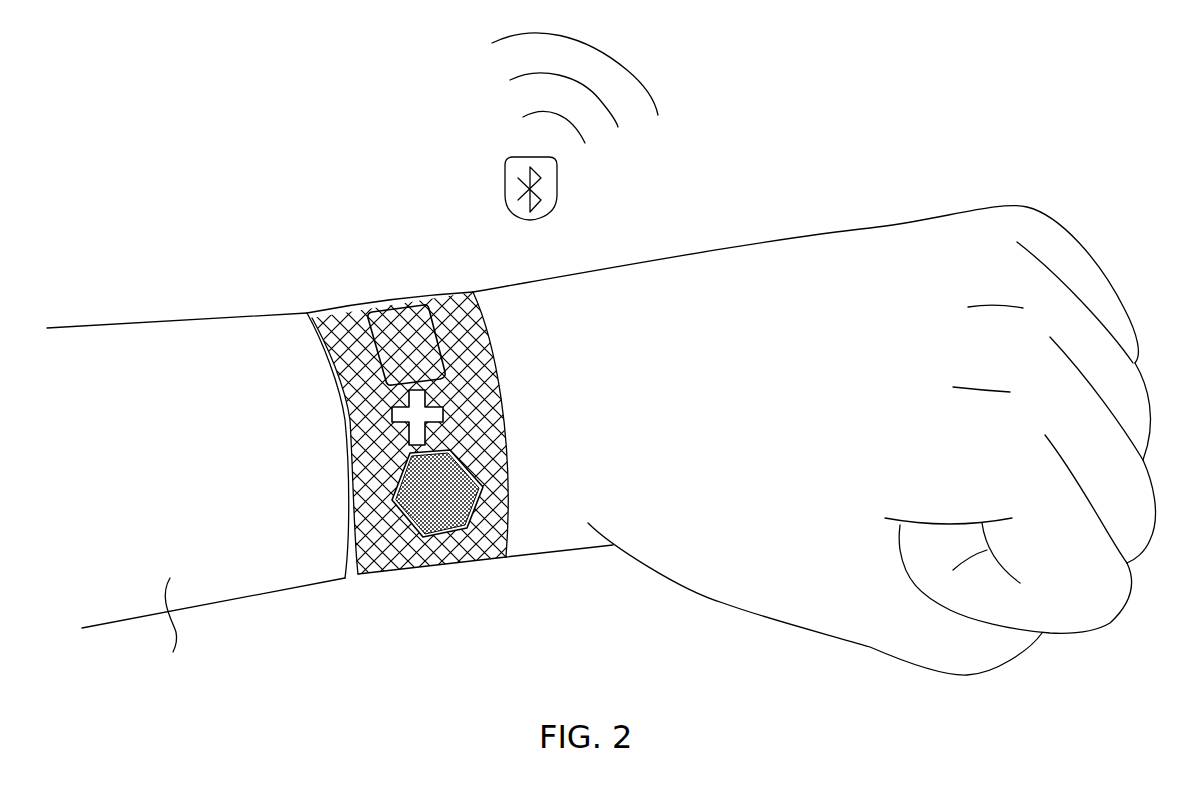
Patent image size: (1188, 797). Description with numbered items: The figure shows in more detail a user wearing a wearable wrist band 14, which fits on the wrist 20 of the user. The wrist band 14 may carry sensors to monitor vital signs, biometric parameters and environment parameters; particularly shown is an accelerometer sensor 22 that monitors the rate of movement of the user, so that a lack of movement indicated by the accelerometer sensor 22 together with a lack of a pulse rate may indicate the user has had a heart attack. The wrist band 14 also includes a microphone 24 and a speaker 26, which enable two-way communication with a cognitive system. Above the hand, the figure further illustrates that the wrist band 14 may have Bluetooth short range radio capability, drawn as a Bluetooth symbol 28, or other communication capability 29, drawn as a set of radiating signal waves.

The wearable wrist band 14 is at (380, 588).
The wrist 20 is at (196, 500).
The accelerometer sensor 22 is at (440, 412).
The microphone 24 is at (418, 342).
The speaker 26 is at (463, 492).
The Bluetooth transceiver 28 is at (505, 187).
The other communication capability 29 is at (625, 70).